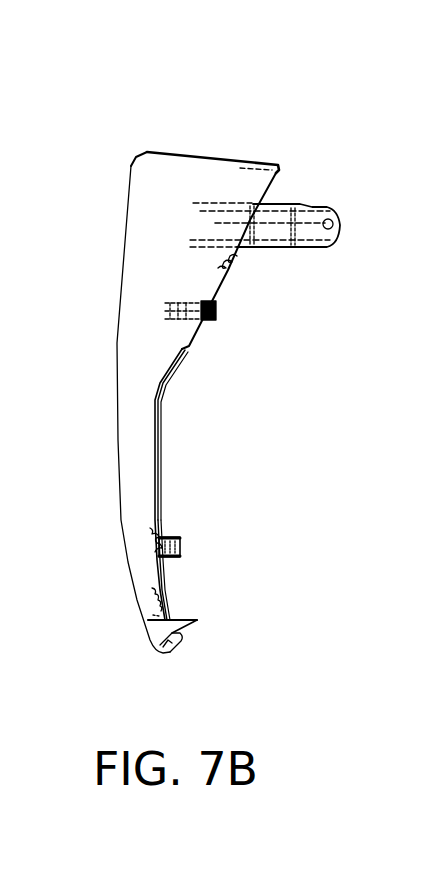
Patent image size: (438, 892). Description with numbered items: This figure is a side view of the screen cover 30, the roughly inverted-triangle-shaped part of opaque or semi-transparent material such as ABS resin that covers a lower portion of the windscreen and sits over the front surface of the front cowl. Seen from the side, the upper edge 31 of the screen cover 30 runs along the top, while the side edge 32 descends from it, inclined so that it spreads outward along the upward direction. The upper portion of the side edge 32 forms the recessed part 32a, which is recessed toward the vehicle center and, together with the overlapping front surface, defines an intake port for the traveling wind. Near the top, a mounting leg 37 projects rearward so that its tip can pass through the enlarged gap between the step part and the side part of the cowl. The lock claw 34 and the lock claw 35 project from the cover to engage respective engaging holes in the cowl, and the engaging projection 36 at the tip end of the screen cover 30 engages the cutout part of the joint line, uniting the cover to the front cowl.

The screen cover 30 is at (168, 126).
The upper edge 31 is at (214, 160).
The side edge 32 is at (162, 582).
The recessed part 32a is at (158, 447).
The lock claw 34 is at (215, 312).
The lock claw 35 is at (181, 541).
The engaging projection 36 is at (197, 620).
The mounting leg 37 is at (323, 203).